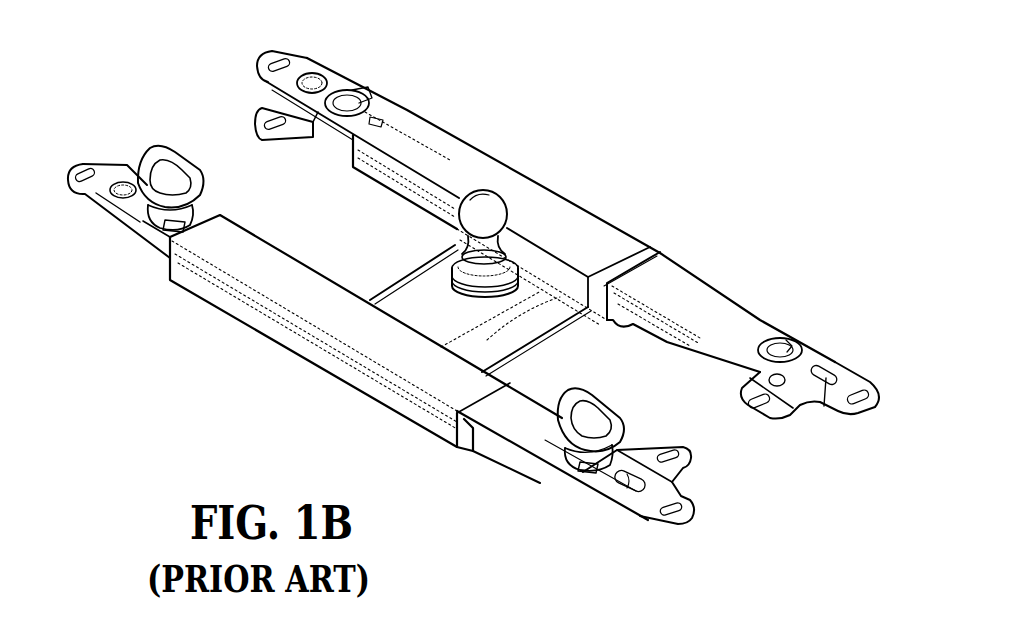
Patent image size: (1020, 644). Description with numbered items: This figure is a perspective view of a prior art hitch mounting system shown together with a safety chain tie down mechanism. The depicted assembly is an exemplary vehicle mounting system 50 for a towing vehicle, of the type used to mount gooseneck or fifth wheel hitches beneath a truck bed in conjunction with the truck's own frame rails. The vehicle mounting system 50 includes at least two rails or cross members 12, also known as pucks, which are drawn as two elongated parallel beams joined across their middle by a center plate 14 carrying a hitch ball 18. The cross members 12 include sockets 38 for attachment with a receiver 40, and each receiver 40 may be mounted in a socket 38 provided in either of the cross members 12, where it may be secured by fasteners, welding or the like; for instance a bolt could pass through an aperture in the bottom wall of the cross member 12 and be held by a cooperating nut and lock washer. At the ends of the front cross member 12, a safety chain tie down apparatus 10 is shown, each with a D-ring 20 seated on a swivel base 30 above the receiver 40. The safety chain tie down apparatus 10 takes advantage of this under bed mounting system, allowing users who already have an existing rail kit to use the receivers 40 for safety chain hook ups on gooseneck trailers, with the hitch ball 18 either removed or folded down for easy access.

The safety chain tie down apparatus 10 is at (383, 337).
The cross member 12 is at (280, 288).
The center plate 14 is at (560, 253).
The hitch ball 18 is at (490, 259).
The D-ring 20 is at (143, 166).
The swivel base 30 is at (152, 211).
The socket 38 is at (352, 95).
The receiver 40 is at (172, 226).
The vehicle mounting system 50 is at (764, 112).